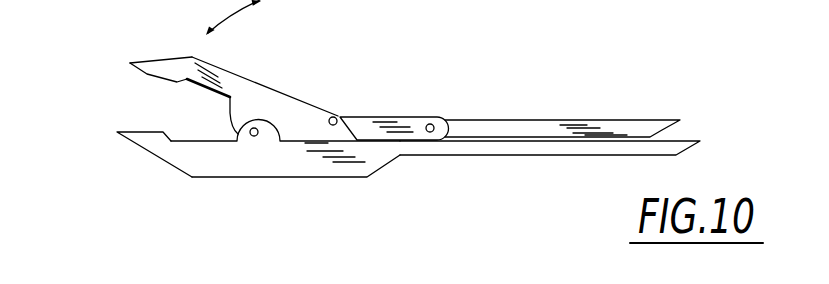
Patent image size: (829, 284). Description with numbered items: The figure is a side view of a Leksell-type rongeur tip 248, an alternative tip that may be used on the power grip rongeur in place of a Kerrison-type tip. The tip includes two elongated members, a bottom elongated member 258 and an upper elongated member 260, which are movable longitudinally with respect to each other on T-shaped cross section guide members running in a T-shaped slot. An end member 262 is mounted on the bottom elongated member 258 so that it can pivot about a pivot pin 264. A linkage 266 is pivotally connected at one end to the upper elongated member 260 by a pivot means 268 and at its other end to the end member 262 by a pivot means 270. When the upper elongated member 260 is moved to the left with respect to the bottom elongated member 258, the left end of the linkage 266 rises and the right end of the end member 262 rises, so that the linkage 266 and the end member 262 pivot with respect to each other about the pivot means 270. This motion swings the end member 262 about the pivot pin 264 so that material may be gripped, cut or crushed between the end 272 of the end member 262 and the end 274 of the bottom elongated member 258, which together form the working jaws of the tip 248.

The Leksell-type rongeur tip 248 is at (213, 178).
The bottom elongated member 258 is at (498, 156).
The elongated member 260 is at (534, 120).
The end member 262 is at (213, 65).
The pivot pin 264 is at (254, 128).
The linkage 266 is at (405, 116).
The pivot means 268 is at (427, 134).
The pivot means 270 is at (335, 117).
The end of end member 272 is at (147, 75).
The end of elongated member 274 is at (133, 132).